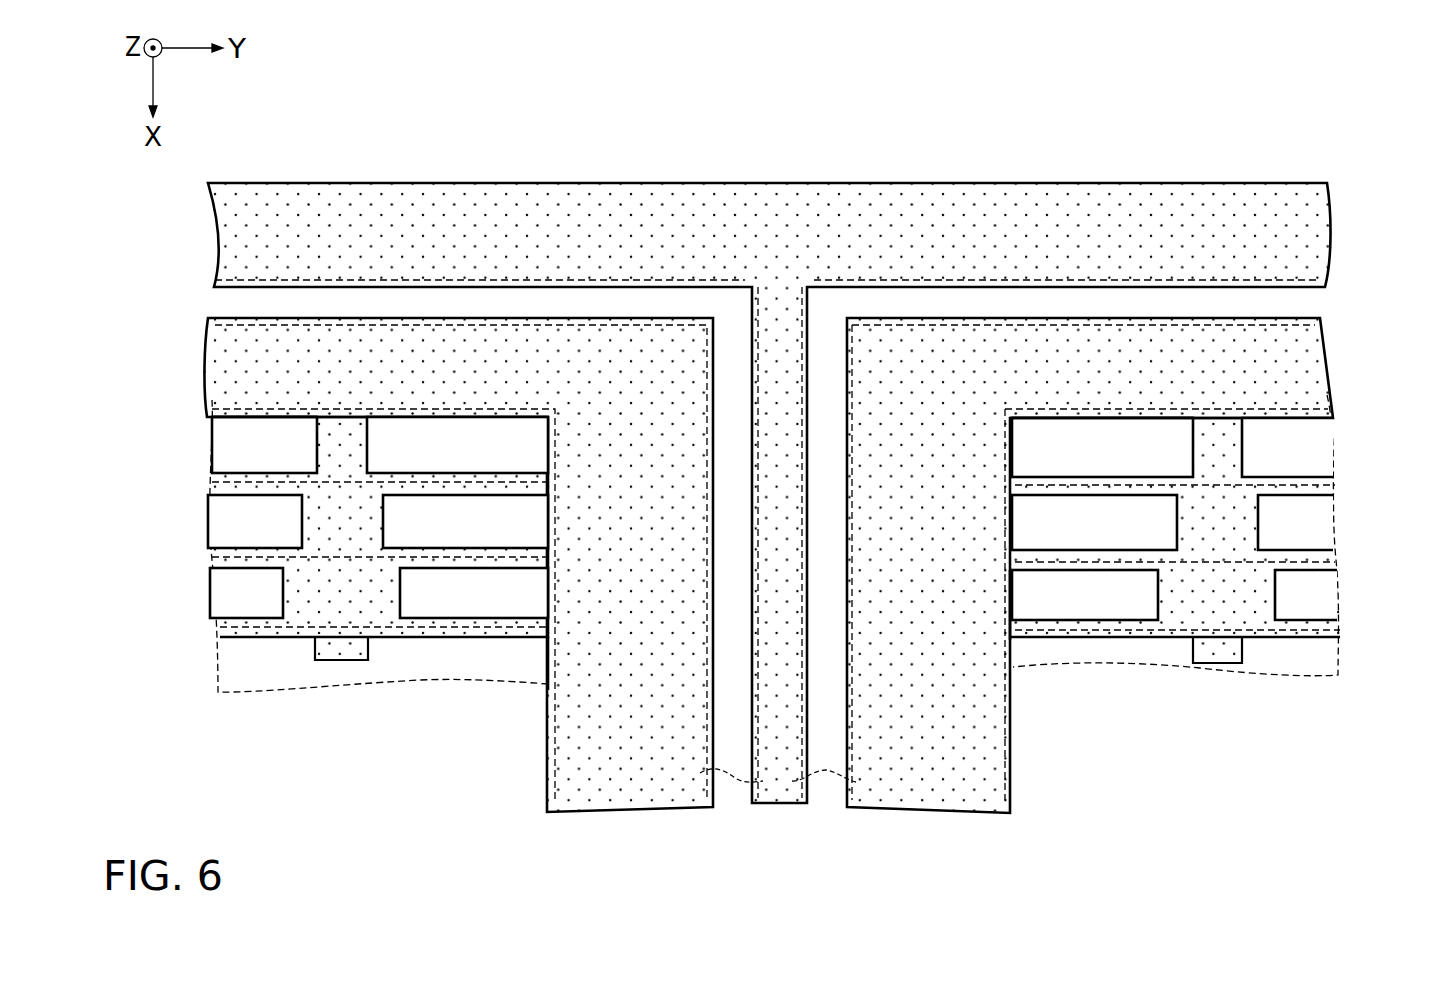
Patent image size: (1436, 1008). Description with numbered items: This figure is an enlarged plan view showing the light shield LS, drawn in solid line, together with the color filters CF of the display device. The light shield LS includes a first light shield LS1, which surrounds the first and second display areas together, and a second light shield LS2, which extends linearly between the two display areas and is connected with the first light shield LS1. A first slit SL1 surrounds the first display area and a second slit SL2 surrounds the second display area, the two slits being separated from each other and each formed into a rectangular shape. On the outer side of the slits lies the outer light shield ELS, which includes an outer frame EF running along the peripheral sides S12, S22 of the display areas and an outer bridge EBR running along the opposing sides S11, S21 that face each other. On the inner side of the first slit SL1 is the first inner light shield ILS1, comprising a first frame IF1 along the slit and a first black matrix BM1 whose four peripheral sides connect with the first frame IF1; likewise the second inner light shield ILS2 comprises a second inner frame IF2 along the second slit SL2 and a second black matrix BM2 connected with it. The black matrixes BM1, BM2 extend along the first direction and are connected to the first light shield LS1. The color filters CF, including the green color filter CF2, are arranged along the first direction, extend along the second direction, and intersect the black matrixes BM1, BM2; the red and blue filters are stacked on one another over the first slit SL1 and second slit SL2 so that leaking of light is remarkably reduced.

The light shield LS is at (339, 180).
The first light shield LS1 is at (156, 183).
The second light shield LS2 is at (1012, 843).
The first slit SL1 is at (250, 280).
The second slit SL2 is at (1287, 328).
The outer light shield ELS is at (700, 126).
The outer frame EF is at (695, 208).
The outer bridge EBR is at (773, 322).
The color filter CF2 is at (226, 528).
The color filter CF is at (209, 702).
The opposing side S11 is at (548, 655).
The peripheral side S12 is at (250, 418).
The opposing side S21 is at (1012, 598).
The peripheral side S22 is at (1163, 421).
The first black matrix BM1 is at (336, 658).
The second black matrix BM2 is at (1207, 660).
The first frame IF1 is at (556, 745).
The second inner frame IF2 is at (988, 717).
The first inner light shield ILS1 is at (473, 817).
The second inner light shield ILS2 is at (1073, 777).